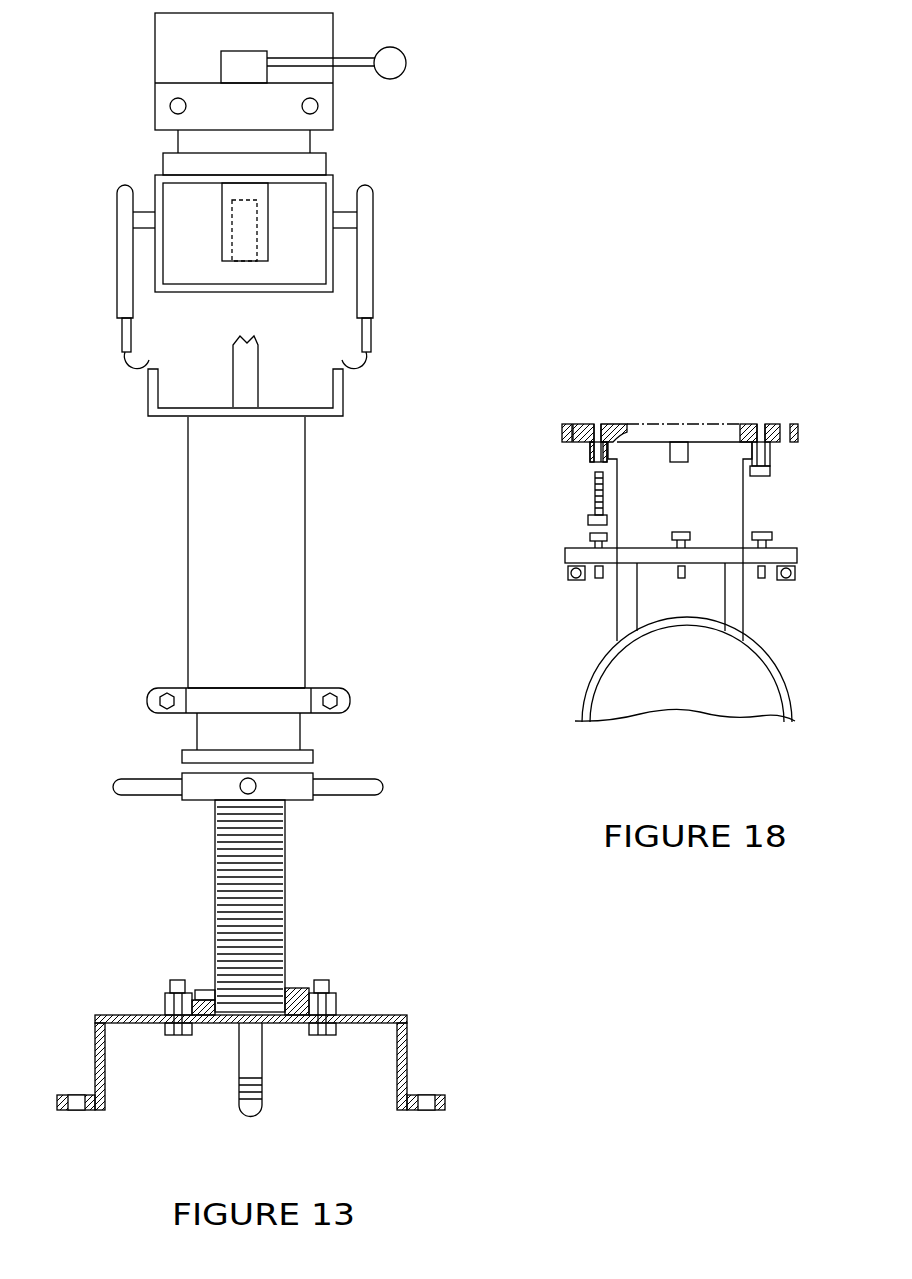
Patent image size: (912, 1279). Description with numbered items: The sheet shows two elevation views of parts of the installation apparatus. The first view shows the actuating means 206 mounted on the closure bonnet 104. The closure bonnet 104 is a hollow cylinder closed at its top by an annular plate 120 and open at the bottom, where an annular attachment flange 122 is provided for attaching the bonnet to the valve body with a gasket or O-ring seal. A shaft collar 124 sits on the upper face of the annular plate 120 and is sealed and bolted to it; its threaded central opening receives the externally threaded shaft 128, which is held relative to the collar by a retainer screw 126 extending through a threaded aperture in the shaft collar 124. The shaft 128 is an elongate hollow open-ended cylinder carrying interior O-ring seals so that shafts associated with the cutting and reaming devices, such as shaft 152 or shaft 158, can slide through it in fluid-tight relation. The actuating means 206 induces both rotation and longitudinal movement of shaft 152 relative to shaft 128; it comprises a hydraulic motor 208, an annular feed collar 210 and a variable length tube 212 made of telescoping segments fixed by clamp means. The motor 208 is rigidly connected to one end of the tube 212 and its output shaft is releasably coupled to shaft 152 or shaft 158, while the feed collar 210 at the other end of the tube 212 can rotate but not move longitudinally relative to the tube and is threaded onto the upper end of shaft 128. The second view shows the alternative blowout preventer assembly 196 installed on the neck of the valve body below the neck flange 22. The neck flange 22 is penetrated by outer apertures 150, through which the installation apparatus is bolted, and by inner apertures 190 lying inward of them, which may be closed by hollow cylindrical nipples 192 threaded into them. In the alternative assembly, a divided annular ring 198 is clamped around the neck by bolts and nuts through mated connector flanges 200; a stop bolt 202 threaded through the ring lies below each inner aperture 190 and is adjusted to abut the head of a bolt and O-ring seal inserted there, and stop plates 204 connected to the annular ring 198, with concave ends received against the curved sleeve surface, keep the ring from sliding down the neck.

In FIG. 13, the hydraulic motor 208 is at (340, 142).
In FIG. 13, the variable length tube 212 is at (150, 552).
In FIG. 13, the actuating means 206 is at (295, 590).
In FIG. 13, the annular feed collar 210 is at (280, 812).
In FIG. 13, the shaft 128 is at (225, 852).
In FIG. 13, the retainer screw 126 is at (130, 968).
In FIG. 13, the shaft collar 124 is at (312, 982).
In FIG. 13, the annular plate 120 is at (67, 1034).
In FIG. 13, the closure bonnet 104 is at (318, 1003).
In FIG. 13, the annular attachment flange 122 is at (472, 1066).
In FIG. 13, the shaft 152 is at (416, 1087).
In FIG. 13, the shaft 158 is at (416, 1087).
In FIG. 18, the outer apertures 150 is at (681, 418).
In FIG. 18, the inner apertures 190 is at (600, 424).
In FIG. 18, the hollow cylindrical nipple 192 is at (707, 453).
In FIG. 18, the neck flange 22 is at (775, 420).
In FIG. 18, the stop bolts 202 is at (684, 588).
In FIG. 18, the divided annular ring 198 is at (795, 553).
In FIG. 18, the blowout preventer assembly 196 is at (827, 586).
In FIG. 18, the connector flanges 200 is at (568, 582).
In FIG. 18, the stop plates 204 is at (710, 600).